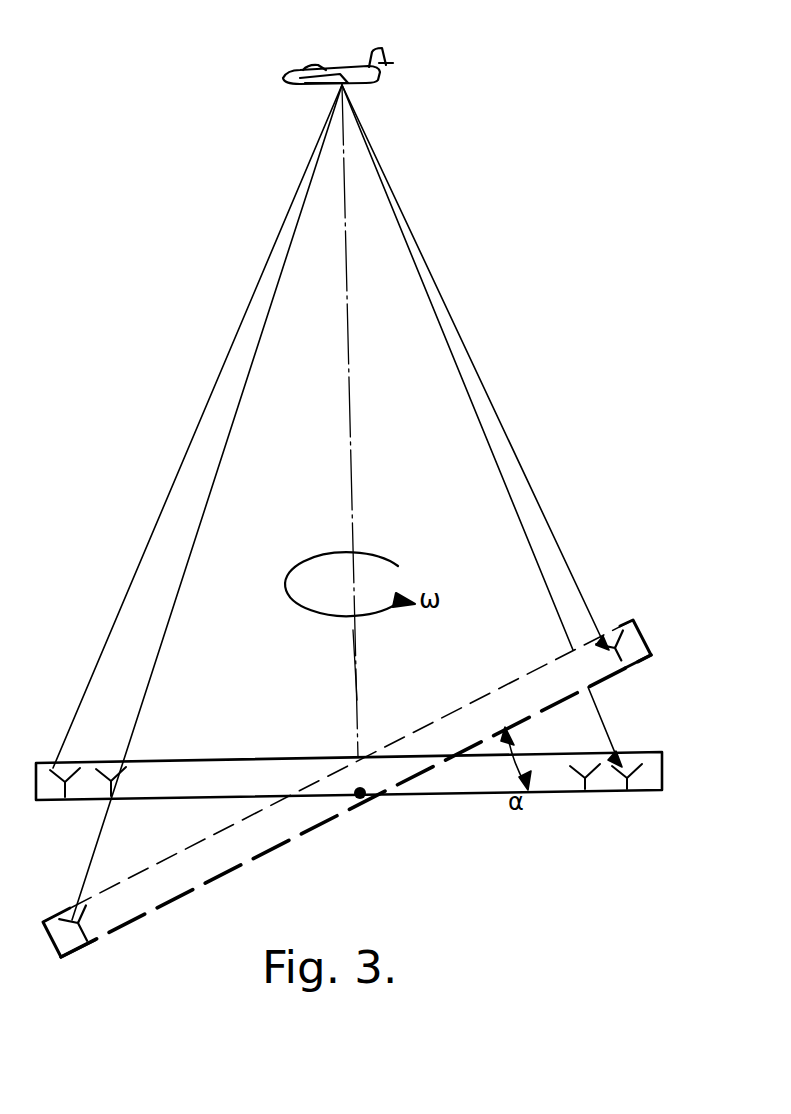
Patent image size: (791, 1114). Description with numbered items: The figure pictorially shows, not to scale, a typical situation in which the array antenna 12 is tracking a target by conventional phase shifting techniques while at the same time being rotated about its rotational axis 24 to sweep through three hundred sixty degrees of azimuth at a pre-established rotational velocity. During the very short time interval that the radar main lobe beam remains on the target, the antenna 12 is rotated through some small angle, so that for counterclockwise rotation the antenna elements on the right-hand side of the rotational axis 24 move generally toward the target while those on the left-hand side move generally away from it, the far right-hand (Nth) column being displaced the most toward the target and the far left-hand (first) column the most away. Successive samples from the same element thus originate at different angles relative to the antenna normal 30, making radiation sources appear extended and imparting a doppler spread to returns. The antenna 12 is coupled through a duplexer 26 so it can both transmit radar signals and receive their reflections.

The antenna 12 is at (663, 757).
The axis 24 is at (363, 798).
The duplexer 26 is at (336, 70).
The antenna normal 30 is at (349, 296).